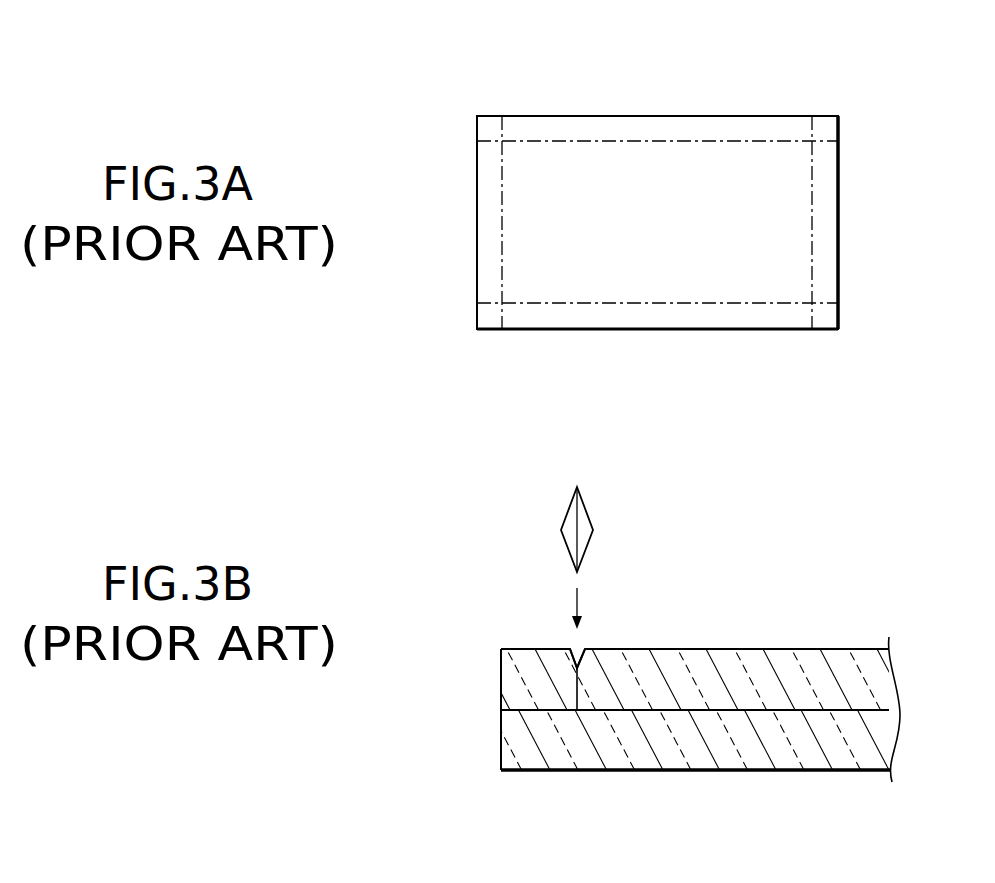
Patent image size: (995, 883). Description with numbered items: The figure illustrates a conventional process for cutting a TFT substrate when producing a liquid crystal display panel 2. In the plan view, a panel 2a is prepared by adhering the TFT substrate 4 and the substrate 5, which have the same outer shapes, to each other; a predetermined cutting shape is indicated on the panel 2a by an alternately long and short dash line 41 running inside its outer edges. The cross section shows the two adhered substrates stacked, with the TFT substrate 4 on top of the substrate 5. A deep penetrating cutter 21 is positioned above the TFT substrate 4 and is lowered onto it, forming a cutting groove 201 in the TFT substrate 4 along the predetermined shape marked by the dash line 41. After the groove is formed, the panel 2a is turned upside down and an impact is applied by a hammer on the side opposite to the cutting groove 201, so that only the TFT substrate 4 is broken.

In FIG. 3A, the liquid crystal display panel 2 is at (790, 191).
In FIG. 3B, the liquid crystal display panel 2 is at (853, 641).
In FIG. 3A, the panel 2a is at (744, 110).
In FIG. 3B, the panel 2a is at (495, 630).
In FIG. 3A, the TFT substrate 4 is at (790, 257).
In FIG. 3B, the TFT substrate 4 is at (700, 658).
In FIG. 3A, the alternately long and short dash line 41 is at (753, 142).
In FIG. 3B, the deep penetrating cutter 21 is at (595, 505).
In FIG. 3B, the cutting groove 201 is at (584, 648).
In FIG. 3B, the substrate 5 is at (666, 752).